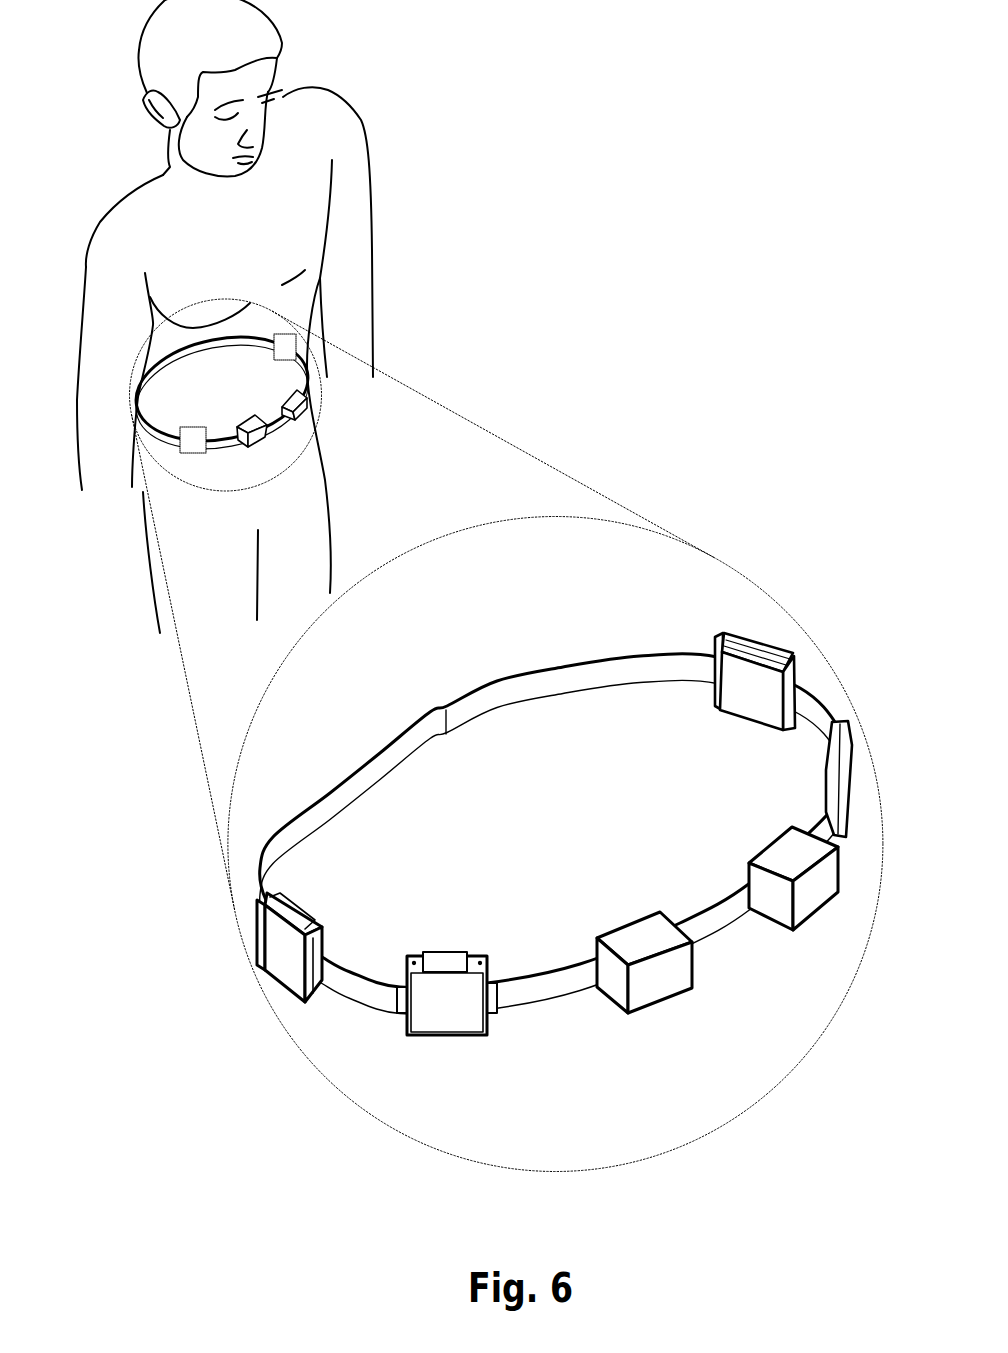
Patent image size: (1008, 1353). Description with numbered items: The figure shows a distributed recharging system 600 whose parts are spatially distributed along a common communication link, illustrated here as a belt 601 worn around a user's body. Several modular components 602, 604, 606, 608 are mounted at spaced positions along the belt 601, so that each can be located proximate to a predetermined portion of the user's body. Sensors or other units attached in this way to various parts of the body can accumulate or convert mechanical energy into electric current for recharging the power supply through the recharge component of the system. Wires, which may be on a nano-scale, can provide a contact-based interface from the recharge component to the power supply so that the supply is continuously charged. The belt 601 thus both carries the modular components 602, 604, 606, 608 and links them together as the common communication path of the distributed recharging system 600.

The distributed recharging system 600 is at (450, 325).
The belt 601 is at (556, 664).
The modular component 602 is at (427, 952).
The modular component 604 is at (310, 923).
The modular component 606 is at (717, 710).
The modular component 608 is at (827, 780).